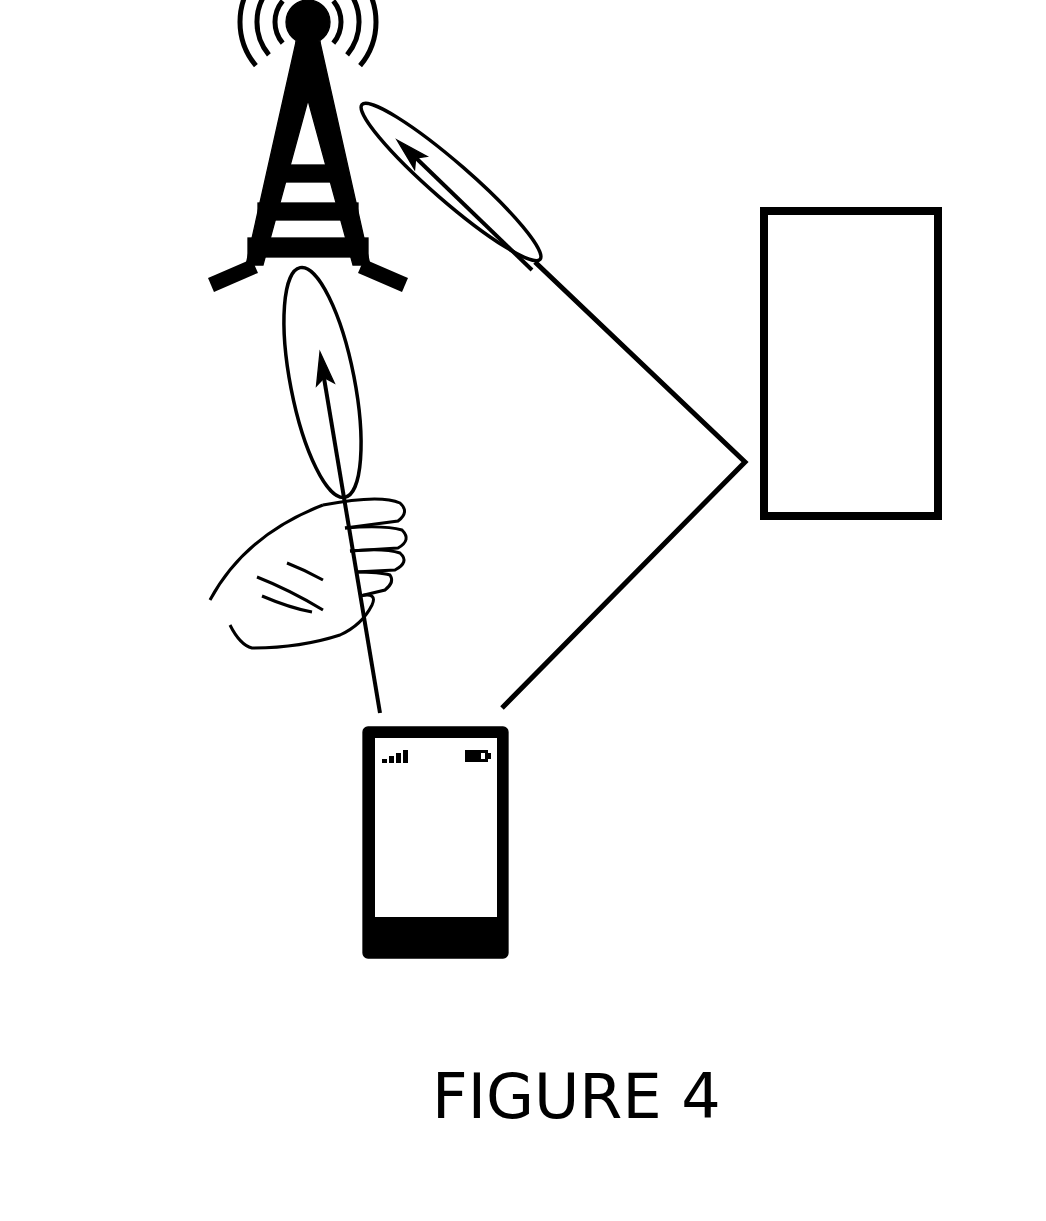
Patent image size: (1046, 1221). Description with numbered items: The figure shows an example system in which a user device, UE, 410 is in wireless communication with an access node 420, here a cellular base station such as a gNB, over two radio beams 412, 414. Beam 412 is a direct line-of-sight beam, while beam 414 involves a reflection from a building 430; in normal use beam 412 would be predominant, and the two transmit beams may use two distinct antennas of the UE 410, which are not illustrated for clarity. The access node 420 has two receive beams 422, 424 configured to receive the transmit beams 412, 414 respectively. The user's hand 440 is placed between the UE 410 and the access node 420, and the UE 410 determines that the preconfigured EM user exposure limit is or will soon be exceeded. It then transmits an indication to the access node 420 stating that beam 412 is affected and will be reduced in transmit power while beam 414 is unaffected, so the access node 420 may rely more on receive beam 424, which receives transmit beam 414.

The user device (UE) 410 is at (508, 902).
The direct line-of-sight beam 412 is at (370, 660).
The reflected beam 414 is at (650, 552).
The access node 420 is at (263, 187).
The receive beam 422 is at (300, 403).
The receive beam 424 is at (485, 175).
The building 430 is at (877, 386).
The user's hand 440 is at (277, 622).